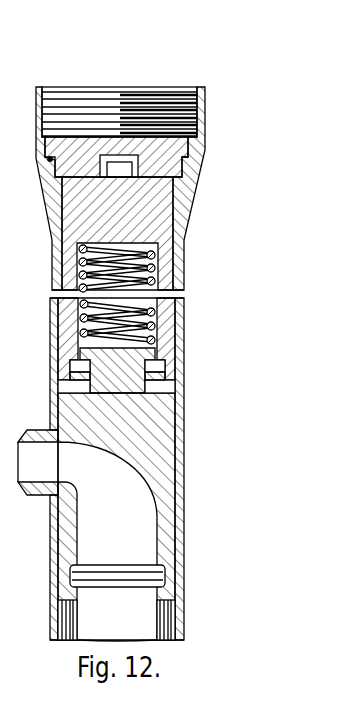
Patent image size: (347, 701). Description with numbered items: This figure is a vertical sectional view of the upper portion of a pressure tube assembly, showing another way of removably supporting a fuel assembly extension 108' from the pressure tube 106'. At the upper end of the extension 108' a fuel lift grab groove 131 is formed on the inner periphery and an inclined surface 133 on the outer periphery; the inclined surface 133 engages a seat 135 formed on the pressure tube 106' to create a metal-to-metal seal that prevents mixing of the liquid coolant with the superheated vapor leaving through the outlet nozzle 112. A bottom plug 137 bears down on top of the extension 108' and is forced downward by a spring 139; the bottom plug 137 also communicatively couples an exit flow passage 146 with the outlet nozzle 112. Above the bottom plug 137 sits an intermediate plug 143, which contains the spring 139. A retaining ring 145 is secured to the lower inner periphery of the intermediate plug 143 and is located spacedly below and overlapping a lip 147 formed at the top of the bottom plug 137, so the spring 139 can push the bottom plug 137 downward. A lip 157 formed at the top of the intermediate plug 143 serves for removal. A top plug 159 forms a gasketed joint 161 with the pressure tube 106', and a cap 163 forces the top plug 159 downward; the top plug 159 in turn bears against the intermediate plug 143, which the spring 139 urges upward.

The cap 163 is at (180, 90).
The top plug 159 is at (182, 148).
The lip 157 is at (132, 170).
The gasketed joint 161 is at (50, 160).
The intermediate plug 143 is at (163, 201).
The spring 139 is at (150, 270).
The lip 147 is at (155, 366).
The retaining ring 145 is at (165, 386).
The bottom plug 137 is at (172, 416).
The outlet nozzle 112 is at (50, 430).
The pressure tube 106' is at (138, 469).
The fuel lift grab groove 131 is at (168, 569).
The fuel assembly extension 108' is at (202, 585).
The inclined surface 133 is at (170, 610).
The seat 135 is at (63, 609).
The exit flow passage 146 is at (85, 628).